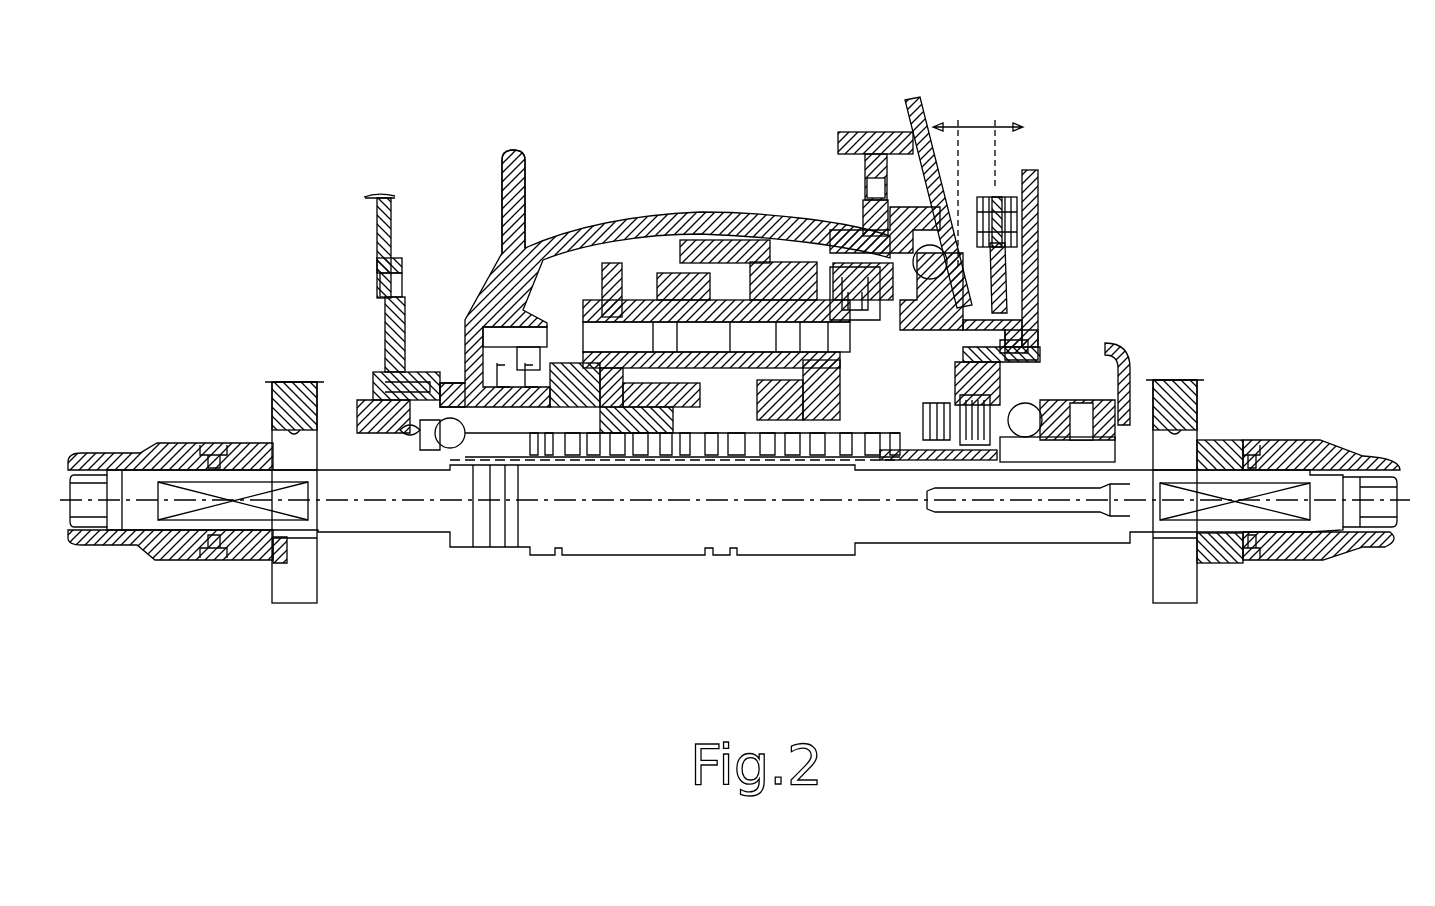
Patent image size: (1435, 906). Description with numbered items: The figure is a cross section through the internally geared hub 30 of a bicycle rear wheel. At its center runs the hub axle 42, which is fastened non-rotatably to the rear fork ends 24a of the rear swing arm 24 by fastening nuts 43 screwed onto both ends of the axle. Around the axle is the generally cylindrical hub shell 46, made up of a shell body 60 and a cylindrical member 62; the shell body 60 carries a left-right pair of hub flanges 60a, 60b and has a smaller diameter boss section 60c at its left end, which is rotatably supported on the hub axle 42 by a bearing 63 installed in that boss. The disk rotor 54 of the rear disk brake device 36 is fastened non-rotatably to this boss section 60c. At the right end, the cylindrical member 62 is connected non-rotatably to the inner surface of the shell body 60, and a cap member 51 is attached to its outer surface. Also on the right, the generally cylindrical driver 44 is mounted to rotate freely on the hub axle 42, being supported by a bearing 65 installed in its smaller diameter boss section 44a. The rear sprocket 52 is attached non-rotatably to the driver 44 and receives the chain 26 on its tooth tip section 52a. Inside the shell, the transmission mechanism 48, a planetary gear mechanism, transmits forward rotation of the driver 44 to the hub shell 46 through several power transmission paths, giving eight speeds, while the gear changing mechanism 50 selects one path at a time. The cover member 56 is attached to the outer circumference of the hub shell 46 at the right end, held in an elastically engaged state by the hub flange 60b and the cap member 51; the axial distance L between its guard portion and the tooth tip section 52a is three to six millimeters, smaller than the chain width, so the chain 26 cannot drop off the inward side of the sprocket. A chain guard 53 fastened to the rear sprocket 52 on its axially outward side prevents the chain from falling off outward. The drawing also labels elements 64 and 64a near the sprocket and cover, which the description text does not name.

The internally geared hub 30 is at (717, 100).
The rear disk brake device 36 is at (376, 183).
The disk rotor 54 is at (392, 218).
The hub flange 60a is at (515, 152).
The shell body 60 is at (580, 222).
The hub shell 46 is at (643, 176).
The transmission mechanism 48 is at (767, 248).
The cylindrical member 62 is at (838, 225).
The hub flange 60b is at (860, 132).
The cover member 56 is at (913, 105).
The cap member 51 is at (945, 215).
The spring 64 is at (975, 240).
The tooth tip section 52a is at (1003, 230).
The chain 26 is at (1040, 193).
The spring portion 64a is at (1000, 232).
The chain guard 53 is at (1038, 253).
The rear sprocket 52 is at (1038, 270).
The driver 44 is at (1003, 330).
The boss section 44a is at (1055, 365).
The rear fork ends 24a is at (298, 385).
The rear swing arm 24 is at (258, 395).
The hub axle 42 is at (1168, 480).
The fastening nuts 43 is at (150, 443).
The boss section 60c is at (455, 380).
The bearing 63 is at (420, 447).
The gear changing mechanism 50 is at (893, 460).
The bearing 65 is at (1025, 452).